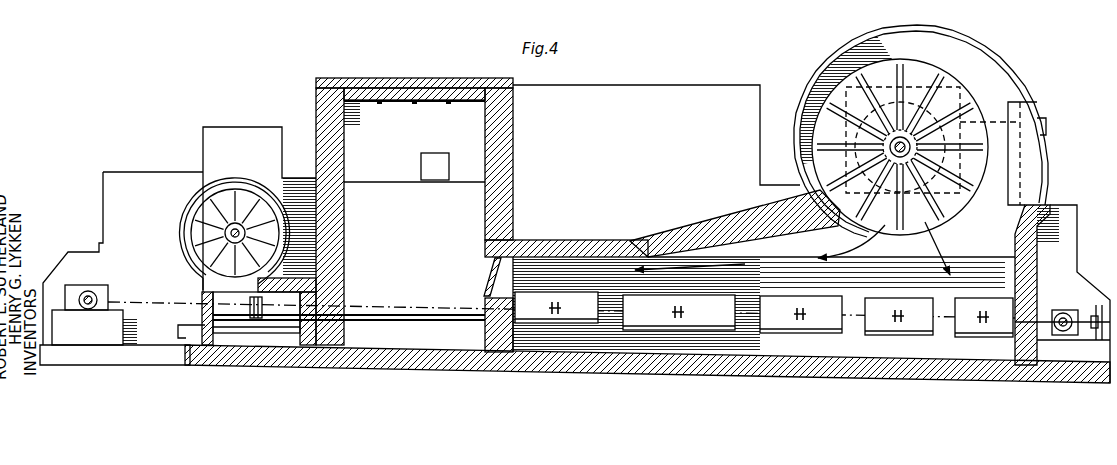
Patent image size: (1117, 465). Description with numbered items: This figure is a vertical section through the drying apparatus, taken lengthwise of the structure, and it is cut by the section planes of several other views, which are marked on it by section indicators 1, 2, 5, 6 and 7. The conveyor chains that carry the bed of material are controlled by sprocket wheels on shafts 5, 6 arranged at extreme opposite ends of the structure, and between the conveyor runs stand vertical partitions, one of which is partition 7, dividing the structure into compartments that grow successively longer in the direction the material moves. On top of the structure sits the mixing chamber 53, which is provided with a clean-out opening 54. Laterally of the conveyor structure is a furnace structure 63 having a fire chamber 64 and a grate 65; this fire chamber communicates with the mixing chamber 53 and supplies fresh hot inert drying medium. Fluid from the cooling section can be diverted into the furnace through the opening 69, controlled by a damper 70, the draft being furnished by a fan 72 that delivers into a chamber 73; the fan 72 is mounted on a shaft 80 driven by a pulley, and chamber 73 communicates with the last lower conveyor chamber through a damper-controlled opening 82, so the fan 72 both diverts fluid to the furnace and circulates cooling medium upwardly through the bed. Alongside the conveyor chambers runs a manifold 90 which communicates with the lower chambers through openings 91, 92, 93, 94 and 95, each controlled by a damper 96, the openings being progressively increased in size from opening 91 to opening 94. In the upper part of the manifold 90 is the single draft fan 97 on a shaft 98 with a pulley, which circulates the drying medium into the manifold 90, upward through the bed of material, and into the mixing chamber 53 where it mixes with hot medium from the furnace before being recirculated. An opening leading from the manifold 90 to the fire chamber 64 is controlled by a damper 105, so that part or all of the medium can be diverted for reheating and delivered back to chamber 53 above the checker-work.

The pulverizing and separating apparatus 1 is at (63, 104).
The section line 2 is at (57, 309).
The shaft 5 is at (1066, 316).
The shaft 6 is at (92, 296).
The vertical partition 7 is at (908, 22).
The mixing chamber 53 is at (384, 100).
The clean-out opening 54 is at (446, 166).
The furnace structure 63 is at (343, 77).
The fire chamber 64 is at (483, 242).
The grate 65 is at (447, 300).
The opening 69 is at (325, 347).
The damper 70 is at (293, 330).
The fan 72 is at (191, 238).
The chamber 73 is at (222, 336).
The shaft 80 is at (205, 262).
The damper-controlled opening 82 is at (241, 333).
The manifold 90 is at (540, 340).
The opening 91 is at (960, 302).
The opening 92 is at (870, 300).
The opening 93 is at (784, 298).
The opening 94 is at (722, 297).
The opening 95 is at (598, 294).
The damper 96 is at (584, 323).
The fan 97 is at (948, 78).
The shaft 98 is at (943, 141).
The damper 105 is at (490, 268).